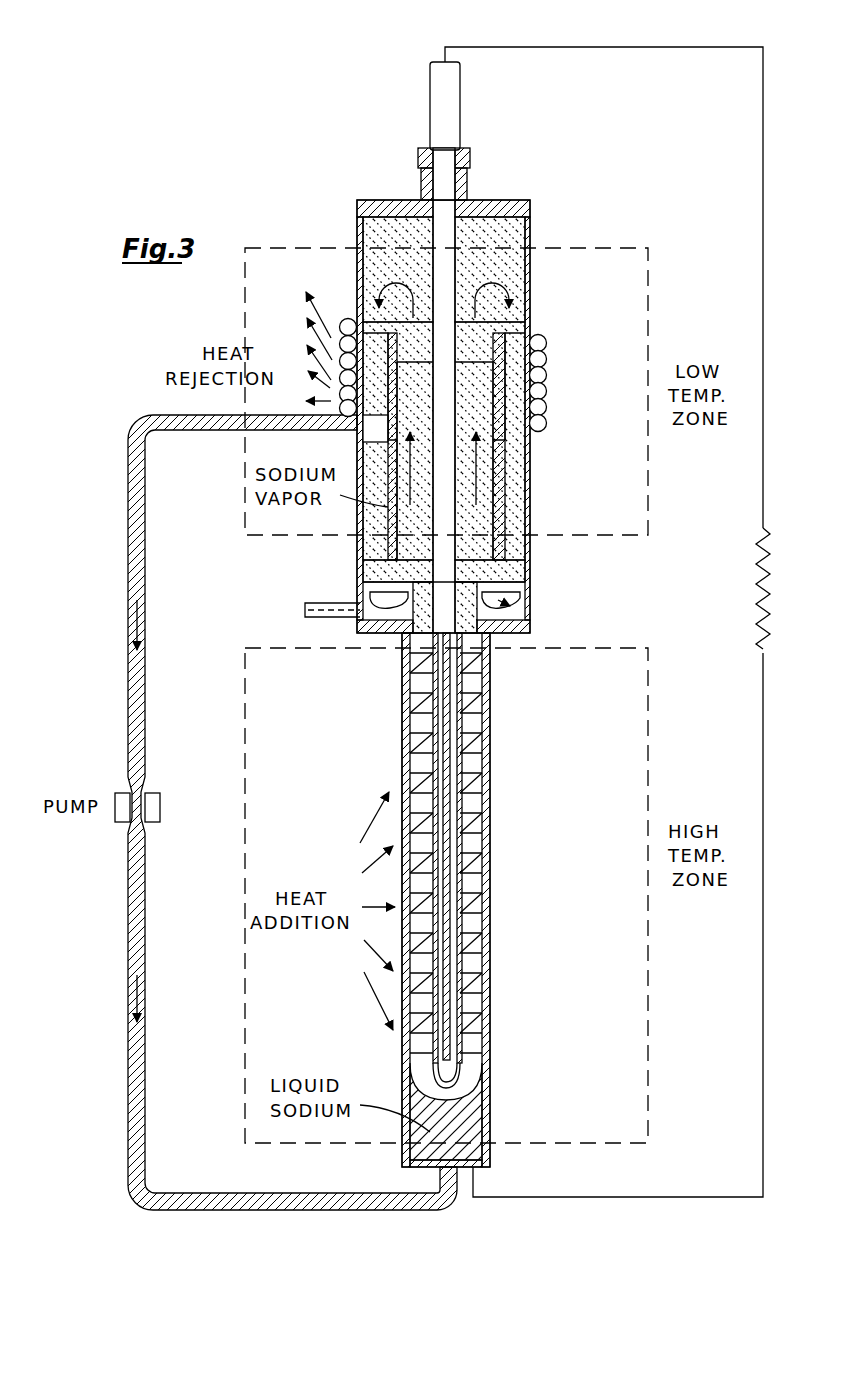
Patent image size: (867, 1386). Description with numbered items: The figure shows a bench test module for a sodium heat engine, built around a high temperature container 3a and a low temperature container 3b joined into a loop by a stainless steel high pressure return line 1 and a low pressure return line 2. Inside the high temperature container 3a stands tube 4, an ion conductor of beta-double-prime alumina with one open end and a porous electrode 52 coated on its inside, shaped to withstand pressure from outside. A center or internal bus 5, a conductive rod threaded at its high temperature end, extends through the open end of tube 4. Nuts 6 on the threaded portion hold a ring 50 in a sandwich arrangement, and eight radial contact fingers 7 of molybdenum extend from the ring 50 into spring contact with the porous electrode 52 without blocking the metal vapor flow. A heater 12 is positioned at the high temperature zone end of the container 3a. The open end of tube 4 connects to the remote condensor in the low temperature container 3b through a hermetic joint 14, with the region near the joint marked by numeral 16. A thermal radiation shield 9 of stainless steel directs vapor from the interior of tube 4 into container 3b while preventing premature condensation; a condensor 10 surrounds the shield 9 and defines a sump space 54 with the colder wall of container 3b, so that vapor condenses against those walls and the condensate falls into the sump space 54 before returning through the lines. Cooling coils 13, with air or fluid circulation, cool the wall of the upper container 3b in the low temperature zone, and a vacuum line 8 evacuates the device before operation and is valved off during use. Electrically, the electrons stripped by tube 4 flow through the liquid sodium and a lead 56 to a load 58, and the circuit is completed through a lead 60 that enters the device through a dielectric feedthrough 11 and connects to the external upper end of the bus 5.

The high pressure return line 1 is at (128, 952).
The low pressure return line 2 is at (130, 686).
The high temperature container 3a is at (494, 1045).
The low temperature container 3b is at (530, 322).
The tube 4 is at (487, 857).
The center or internal bus 5 is at (452, 270).
The nuts 6 is at (455, 762).
The radial contact fingers 7 is at (420, 730).
The vacuum line 8 is at (310, 604).
The thermal radiation shield 9 is at (497, 492).
The condensor 10 is at (506, 351).
The dielectric feedthrough 11 is at (418, 182).
The heater 12 is at (312, 970).
The cooling coils 13 is at (346, 318).
The hermetic joint 14 is at (490, 602).
The vapor passage 16 is at (372, 603).
The ring 50 is at (420, 765).
The porous electrode 52 is at (457, 929).
The sump space 54 is at (514, 393).
The lead 56 is at (614, 1200).
The load 58 is at (770, 601).
The lead 60 is at (543, 46).